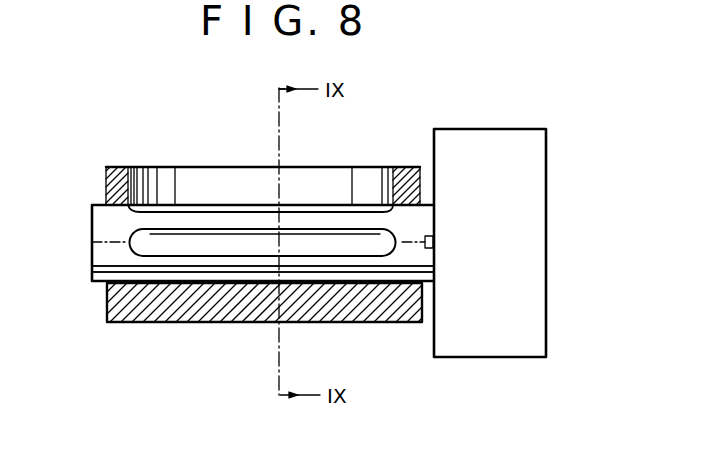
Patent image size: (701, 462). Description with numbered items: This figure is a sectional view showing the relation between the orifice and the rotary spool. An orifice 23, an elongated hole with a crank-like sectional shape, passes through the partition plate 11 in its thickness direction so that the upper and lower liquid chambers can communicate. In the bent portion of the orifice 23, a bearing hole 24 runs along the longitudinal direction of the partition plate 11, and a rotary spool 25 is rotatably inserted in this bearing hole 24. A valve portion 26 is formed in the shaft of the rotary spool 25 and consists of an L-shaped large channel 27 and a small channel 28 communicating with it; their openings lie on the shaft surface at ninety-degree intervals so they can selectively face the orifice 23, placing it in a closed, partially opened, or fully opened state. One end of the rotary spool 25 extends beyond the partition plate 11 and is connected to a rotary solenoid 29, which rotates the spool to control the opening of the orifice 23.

The partition plate 11 is at (133, 323).
The orifice 23 is at (359, 172).
The bearing hole 24 is at (180, 278).
The rotary spool 25 is at (401, 275).
The valve portion 26 is at (262, 266).
The large channel 27 is at (343, 247).
The small channel 28 is at (195, 207).
The rotary solenoid 29 is at (538, 170).